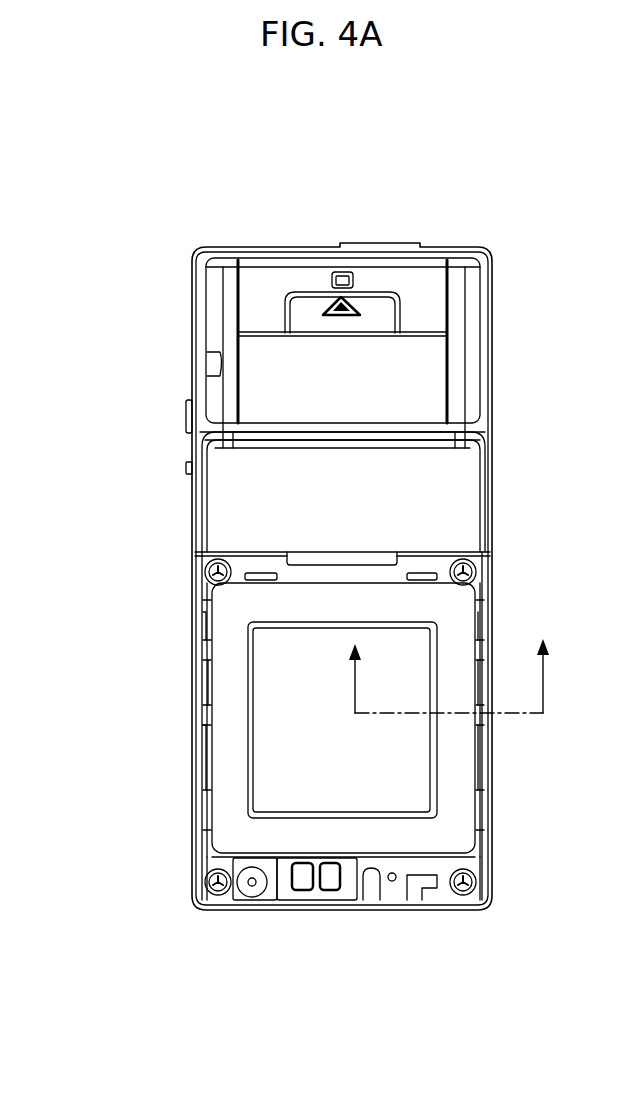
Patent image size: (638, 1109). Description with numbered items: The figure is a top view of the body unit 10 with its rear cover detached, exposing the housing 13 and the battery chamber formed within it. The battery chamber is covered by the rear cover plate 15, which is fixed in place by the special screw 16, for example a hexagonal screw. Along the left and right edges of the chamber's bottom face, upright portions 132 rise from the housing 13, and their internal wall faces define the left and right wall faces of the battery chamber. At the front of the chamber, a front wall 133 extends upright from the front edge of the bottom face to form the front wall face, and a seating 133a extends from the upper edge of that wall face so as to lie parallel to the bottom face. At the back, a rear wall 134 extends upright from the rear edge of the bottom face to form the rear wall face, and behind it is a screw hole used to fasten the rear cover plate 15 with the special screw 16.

The body unit 10 is at (383, 226).
The housing 13 is at (192, 442).
The front wall 133 is at (305, 577).
The seating 133a is at (260, 567).
The rear cover plate 15 is at (230, 658).
The upright portions 132 is at (197, 643).
The special screw 16 is at (252, 890).
The rear wall 134 is at (349, 868).